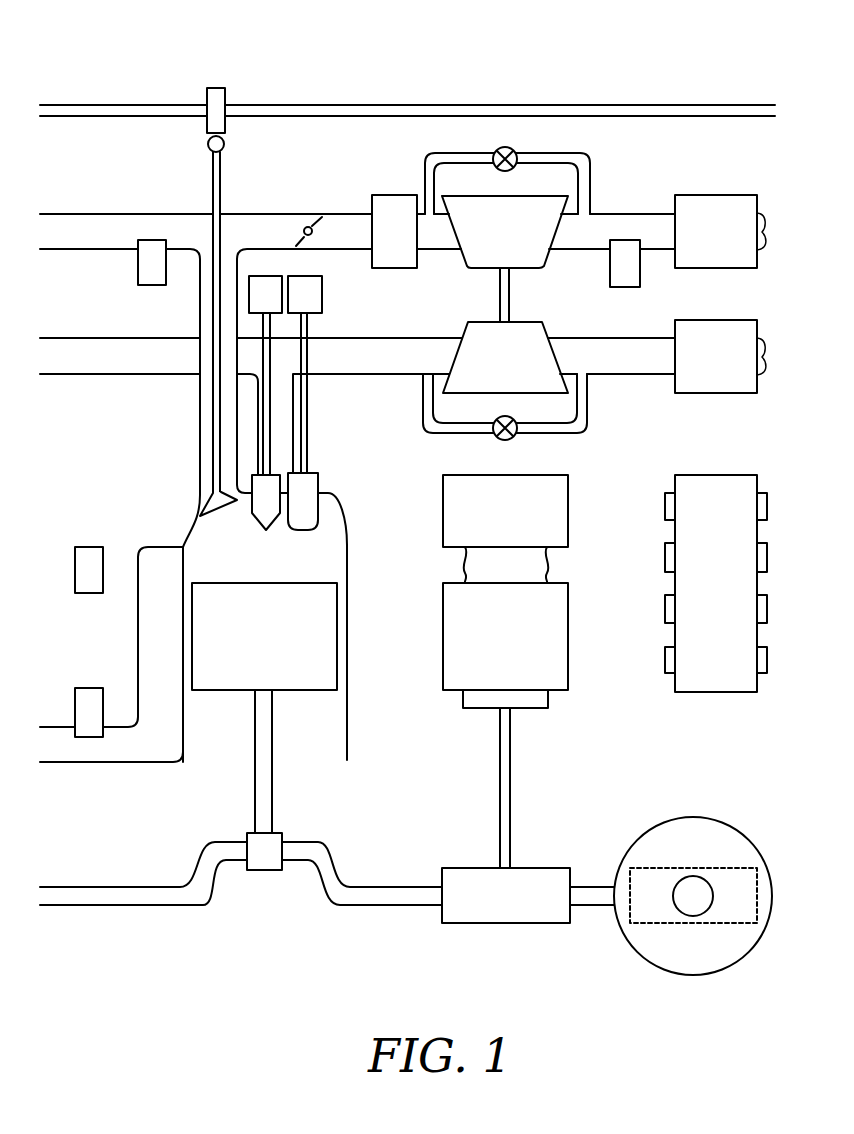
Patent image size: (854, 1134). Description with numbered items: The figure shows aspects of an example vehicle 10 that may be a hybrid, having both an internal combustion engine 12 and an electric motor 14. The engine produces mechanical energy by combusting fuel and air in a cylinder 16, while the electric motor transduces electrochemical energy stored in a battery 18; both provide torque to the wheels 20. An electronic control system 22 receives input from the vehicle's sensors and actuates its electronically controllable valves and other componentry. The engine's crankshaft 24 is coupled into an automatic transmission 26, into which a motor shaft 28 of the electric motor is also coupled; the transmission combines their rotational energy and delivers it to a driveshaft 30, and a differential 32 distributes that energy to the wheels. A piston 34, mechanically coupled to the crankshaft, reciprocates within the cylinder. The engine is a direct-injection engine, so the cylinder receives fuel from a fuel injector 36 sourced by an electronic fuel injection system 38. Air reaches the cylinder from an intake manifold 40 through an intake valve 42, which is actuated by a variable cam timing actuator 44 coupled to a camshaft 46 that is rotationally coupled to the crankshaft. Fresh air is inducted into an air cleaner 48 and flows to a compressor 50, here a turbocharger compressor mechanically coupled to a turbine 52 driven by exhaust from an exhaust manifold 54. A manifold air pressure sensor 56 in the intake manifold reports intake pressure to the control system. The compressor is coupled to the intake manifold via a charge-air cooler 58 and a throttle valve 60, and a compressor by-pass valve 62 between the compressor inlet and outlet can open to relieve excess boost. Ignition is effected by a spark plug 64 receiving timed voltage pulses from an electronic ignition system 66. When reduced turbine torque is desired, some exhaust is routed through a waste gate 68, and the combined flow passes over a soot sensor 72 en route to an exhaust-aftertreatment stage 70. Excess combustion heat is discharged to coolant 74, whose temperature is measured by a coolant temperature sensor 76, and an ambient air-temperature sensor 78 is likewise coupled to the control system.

The vehicle 10 is at (600, 33).
The internal combustion engine 12 is at (372, 641).
The electric motor 14 is at (517, 647).
The cylinder 16 is at (371, 537).
The battery 18 is at (517, 522).
The wheels 20 is at (760, 824).
The electronic control system 22 is at (728, 594).
The crankshaft 24 is at (93, 887).
The automatic transmission 26 is at (517, 907).
The motor shaft 28 is at (512, 762).
The driveshaft 30 is at (594, 908).
The differential 32 is at (665, 868).
The piston 34 is at (276, 649).
The fuel injector 36 is at (260, 527).
The electronic fuel injection system 38 is at (277, 307).
The intake manifold 40 is at (88, 247).
The intake valve 42 is at (222, 505).
The variable cam timing (VCT) actuator 44 is at (197, 158).
The camshaft 46 is at (94, 104).
The air cleaner 48 is at (728, 244).
The compressor 50 is at (517, 244).
The turbine 52 is at (517, 369).
The exhaust manifold 54 is at (88, 370).
The manifold air pressure (MAP) sensor 56 is at (137, 268).
The charge-air cooler 58 is at (406, 244).
The throttle valve 60 is at (308, 226).
The compressor by-pass valve 62 is at (497, 150).
The spark plug 64 is at (318, 493).
The electronic ignition system 66 is at (316, 307).
The waste gate 68 is at (520, 438).
The exhaust-aftertreatment stage 70 is at (728, 369).
The soot sensor 72 is at (608, 282).
The coolant 74 is at (171, 647).
The coolant temperature sensor 76 is at (75, 706).
The ambient air-temperature sensor 78 is at (75, 565).